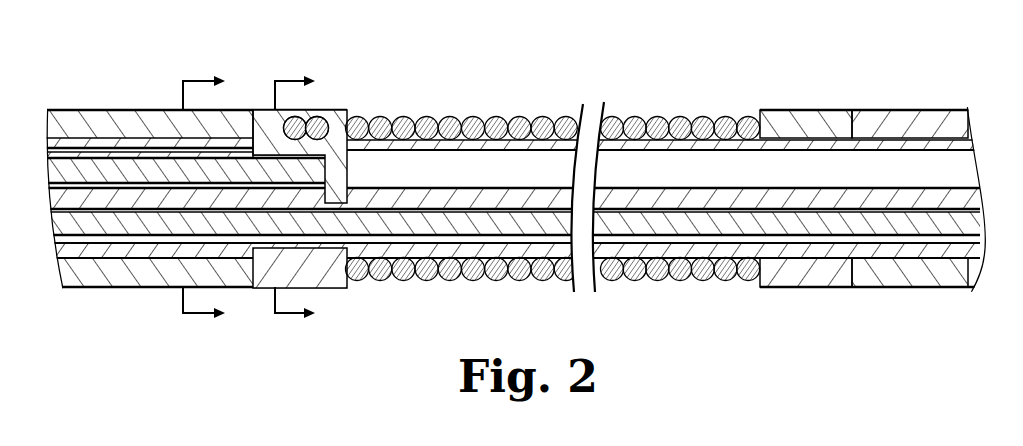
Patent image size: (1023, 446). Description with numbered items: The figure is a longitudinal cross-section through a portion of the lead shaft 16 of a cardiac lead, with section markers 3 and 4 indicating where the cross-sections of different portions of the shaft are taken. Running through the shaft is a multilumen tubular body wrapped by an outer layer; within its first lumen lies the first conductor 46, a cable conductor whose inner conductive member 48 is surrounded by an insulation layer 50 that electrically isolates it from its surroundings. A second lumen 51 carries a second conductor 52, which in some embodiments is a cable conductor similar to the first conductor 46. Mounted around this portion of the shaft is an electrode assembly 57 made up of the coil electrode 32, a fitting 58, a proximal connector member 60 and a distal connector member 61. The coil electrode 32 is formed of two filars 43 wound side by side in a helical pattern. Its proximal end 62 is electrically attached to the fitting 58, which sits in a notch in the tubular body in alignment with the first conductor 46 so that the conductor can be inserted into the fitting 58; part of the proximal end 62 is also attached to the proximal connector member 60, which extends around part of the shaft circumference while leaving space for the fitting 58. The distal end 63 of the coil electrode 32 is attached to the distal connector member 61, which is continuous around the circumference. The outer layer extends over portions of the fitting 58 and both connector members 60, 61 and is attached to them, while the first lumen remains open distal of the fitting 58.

The lead shaft 16 is at (391, 313).
The coil electrode 32 is at (531, 103).
The filars 43 is at (325, 117).
The first conductor 46 is at (120, 150).
The inner conductive member 48 is at (147, 157).
The insulation layer 50 is at (157, 160).
The second lumen 51 is at (488, 228).
The second conductor 52 is at (425, 225).
The electrode assembly 57 is at (501, 86).
The fitting 58 is at (348, 114).
The proximal connector member 60 is at (258, 289).
The distal connector member 61 is at (806, 270).
The proximal end 62 is at (378, 109).
The distal end 63 is at (753, 118).
The section line 3 is at (215, 200).
The section line 4 is at (307, 200).